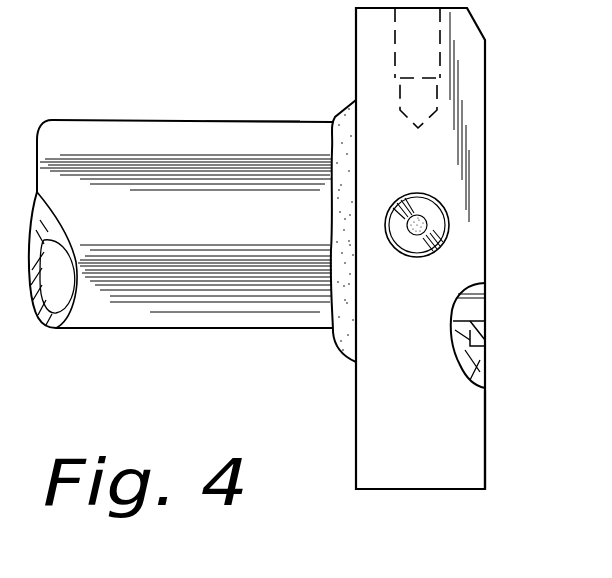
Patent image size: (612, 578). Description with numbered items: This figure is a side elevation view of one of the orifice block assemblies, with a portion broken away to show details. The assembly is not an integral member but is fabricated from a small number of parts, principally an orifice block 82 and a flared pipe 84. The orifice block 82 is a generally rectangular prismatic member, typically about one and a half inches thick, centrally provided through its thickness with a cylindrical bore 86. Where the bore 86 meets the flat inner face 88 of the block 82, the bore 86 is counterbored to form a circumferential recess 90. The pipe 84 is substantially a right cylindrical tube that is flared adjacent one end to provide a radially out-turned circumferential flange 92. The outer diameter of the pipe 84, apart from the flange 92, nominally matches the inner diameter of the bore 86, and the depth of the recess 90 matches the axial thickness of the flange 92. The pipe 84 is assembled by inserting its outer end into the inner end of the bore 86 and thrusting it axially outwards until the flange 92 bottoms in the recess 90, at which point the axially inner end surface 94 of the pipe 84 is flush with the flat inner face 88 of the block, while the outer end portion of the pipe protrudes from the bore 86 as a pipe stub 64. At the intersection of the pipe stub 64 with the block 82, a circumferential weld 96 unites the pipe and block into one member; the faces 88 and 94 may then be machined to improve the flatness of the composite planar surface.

The pipe stub 64 is at (110, 119).
The orifice block 82 is at (475, 150).
The flared pipe 84 is at (226, 100).
The cylindrical bore 86 is at (455, 325).
The flat inner face 88 is at (486, 423).
The circumferential recess 90 is at (483, 345).
The circumferential flange 92 is at (473, 338).
The axially inner end surface 94 is at (488, 328).
The circumferential weld 96 is at (336, 116).